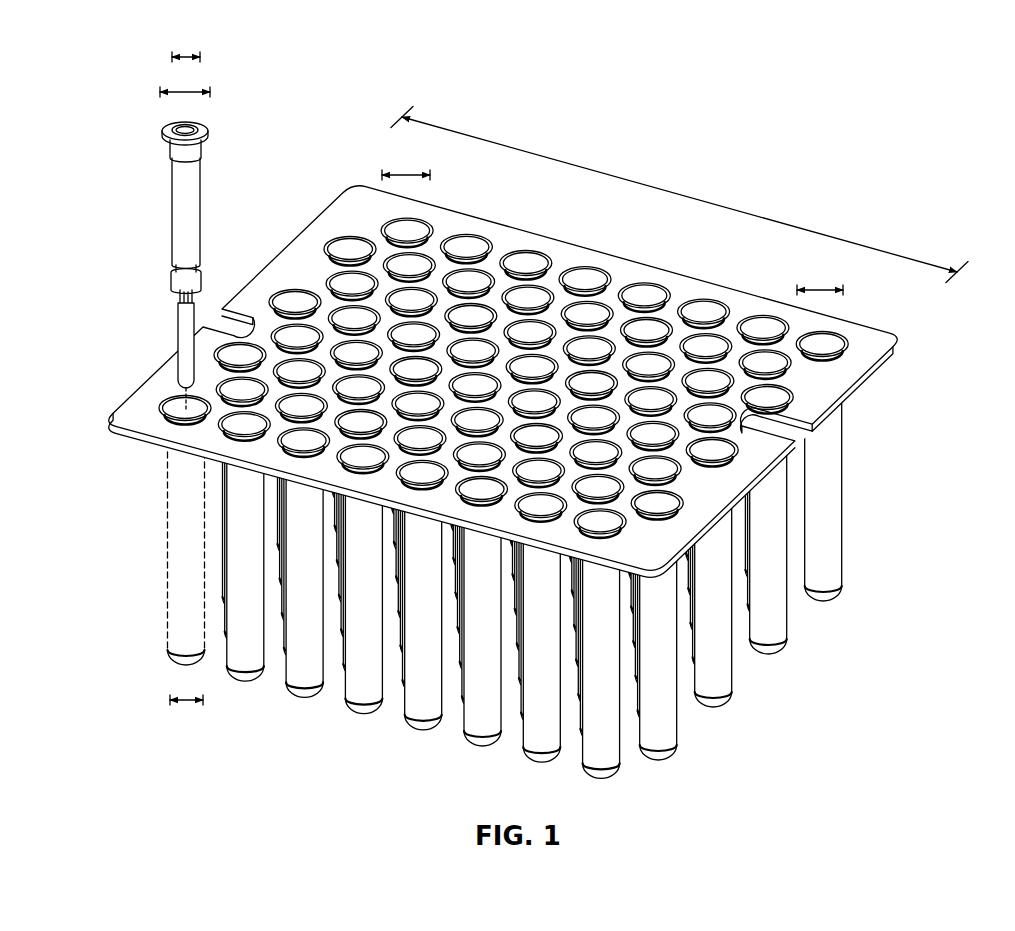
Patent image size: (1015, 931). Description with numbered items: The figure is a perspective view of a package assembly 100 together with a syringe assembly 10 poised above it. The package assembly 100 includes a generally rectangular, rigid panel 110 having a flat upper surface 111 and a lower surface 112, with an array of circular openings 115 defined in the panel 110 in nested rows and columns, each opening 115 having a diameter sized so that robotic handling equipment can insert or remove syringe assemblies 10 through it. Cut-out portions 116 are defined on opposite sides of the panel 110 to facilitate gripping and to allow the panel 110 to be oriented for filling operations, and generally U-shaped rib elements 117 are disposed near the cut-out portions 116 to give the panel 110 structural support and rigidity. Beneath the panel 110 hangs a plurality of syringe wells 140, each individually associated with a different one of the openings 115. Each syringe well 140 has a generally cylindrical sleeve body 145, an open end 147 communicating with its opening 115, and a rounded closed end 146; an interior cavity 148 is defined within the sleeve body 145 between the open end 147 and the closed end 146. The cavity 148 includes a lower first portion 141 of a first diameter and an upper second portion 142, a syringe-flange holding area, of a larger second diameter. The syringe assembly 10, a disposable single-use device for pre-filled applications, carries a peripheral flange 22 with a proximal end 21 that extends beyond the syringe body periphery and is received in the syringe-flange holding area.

The package assembly 100 is at (512, 431).
The syringe assembly 10 is at (198, 255).
The proximal end 21 is at (170, 125).
The peripheral flange 22 is at (164, 138).
The panel 110 is at (512, 381).
The upper surface 111 is at (125, 415).
The lower surface 112 is at (142, 445).
The openings 115 is at (613, 290).
The cut-out portions 116 is at (212, 318).
The rib elements 117 is at (800, 437).
The syringe wells 140 is at (456, 524).
The first portion 141 is at (178, 612).
The second portion 142 is at (828, 340).
The sleeve body 145 is at (412, 722).
The closed end 146 is at (660, 763).
The open end 147 is at (178, 408).
The interior cavity 148 is at (667, 703).